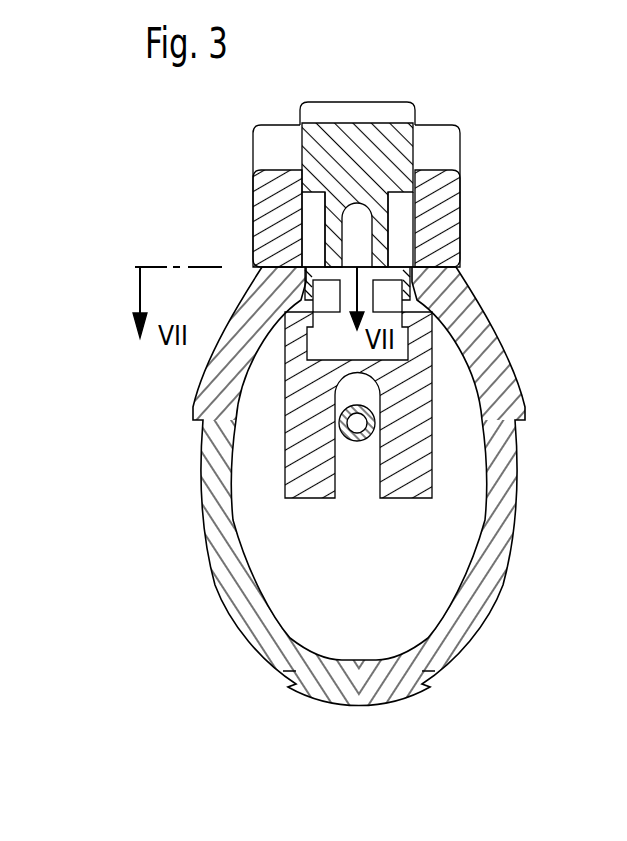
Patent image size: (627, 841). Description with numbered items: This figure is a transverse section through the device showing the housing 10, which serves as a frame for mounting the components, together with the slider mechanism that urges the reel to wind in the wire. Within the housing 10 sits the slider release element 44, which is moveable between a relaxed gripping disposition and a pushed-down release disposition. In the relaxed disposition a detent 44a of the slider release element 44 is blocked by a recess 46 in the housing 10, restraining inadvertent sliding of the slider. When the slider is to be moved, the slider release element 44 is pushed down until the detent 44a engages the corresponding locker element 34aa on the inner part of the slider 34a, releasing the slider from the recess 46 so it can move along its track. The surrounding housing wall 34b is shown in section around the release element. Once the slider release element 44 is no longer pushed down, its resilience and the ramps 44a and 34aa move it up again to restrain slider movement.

The housing 10 is at (525, 381).
The recess 46 is at (409, 301).
The upper housing part 34b is at (445, 252).
The slider release element 44 is at (382, 137).
The detent 44a is at (302, 243).
The inner part of the slider 34a is at (302, 385).
The locker element 34aa is at (303, 296).